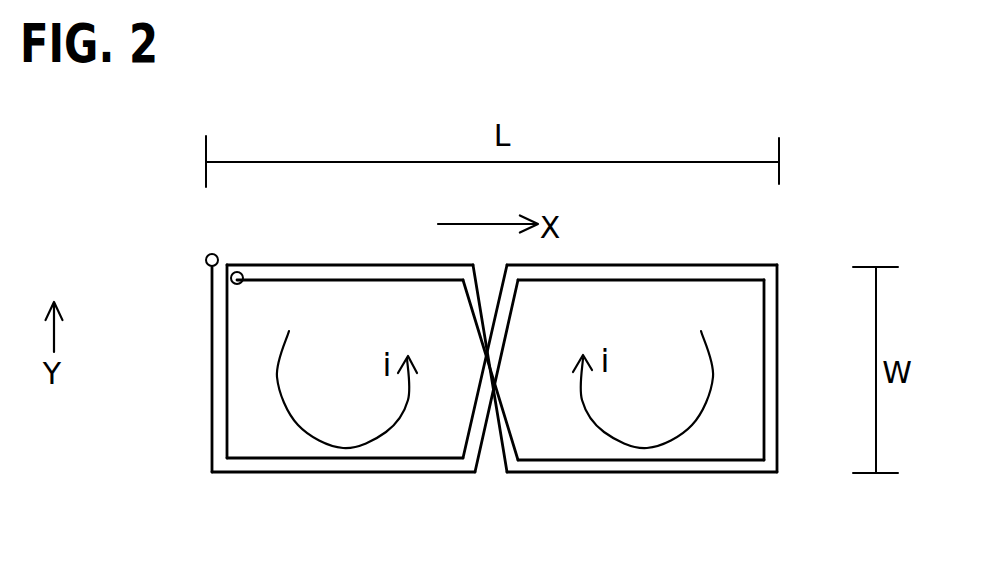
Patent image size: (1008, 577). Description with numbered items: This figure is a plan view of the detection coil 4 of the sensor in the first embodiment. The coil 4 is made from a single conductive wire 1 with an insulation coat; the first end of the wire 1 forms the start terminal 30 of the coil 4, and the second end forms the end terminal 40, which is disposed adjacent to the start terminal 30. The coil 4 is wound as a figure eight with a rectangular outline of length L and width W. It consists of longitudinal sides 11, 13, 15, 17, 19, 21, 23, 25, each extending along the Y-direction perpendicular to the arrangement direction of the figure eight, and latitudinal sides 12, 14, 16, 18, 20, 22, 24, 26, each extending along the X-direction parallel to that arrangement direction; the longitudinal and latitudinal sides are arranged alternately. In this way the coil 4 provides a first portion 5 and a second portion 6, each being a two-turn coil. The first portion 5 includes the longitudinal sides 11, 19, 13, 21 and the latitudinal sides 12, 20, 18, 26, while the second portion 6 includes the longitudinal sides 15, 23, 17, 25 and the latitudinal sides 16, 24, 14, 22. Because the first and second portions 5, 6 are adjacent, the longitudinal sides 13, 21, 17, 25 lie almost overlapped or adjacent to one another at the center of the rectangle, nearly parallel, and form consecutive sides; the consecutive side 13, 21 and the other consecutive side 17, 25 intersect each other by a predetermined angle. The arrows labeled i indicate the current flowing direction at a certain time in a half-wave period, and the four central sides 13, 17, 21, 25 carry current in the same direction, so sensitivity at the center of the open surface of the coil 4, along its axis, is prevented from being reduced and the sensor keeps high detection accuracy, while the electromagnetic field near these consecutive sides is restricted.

The conductive wire 1 is at (484, 365).
The detection coil 4 is at (484, 365).
The first portion 5 is at (307, 393).
The second portion 6 is at (679, 365).
The longitudinal side 11 is at (210, 420).
The latitudinal side 12 is at (360, 474).
The longitudinal side 13 is at (473, 413).
The latitudinal side 14 is at (668, 283).
The longitudinal side 15 is at (763, 320).
The latitudinal side 16 is at (718, 458).
The longitudinal side 17 is at (512, 425).
The latitudinal side 18 is at (365, 262).
The longitudinal side 19 is at (228, 390).
The latitudinal side 20 is at (410, 474).
The longitudinal side 21 is at (512, 314).
The latitudinal side 22 is at (693, 265).
The longitudinal side 23 is at (780, 372).
The latitudinal side 24 is at (655, 476).
The longitudinal side 25 is at (472, 320).
The latitudinal side 26 is at (415, 281).
The start terminal 30 is at (206, 257).
The end terminal 40 is at (231, 278).